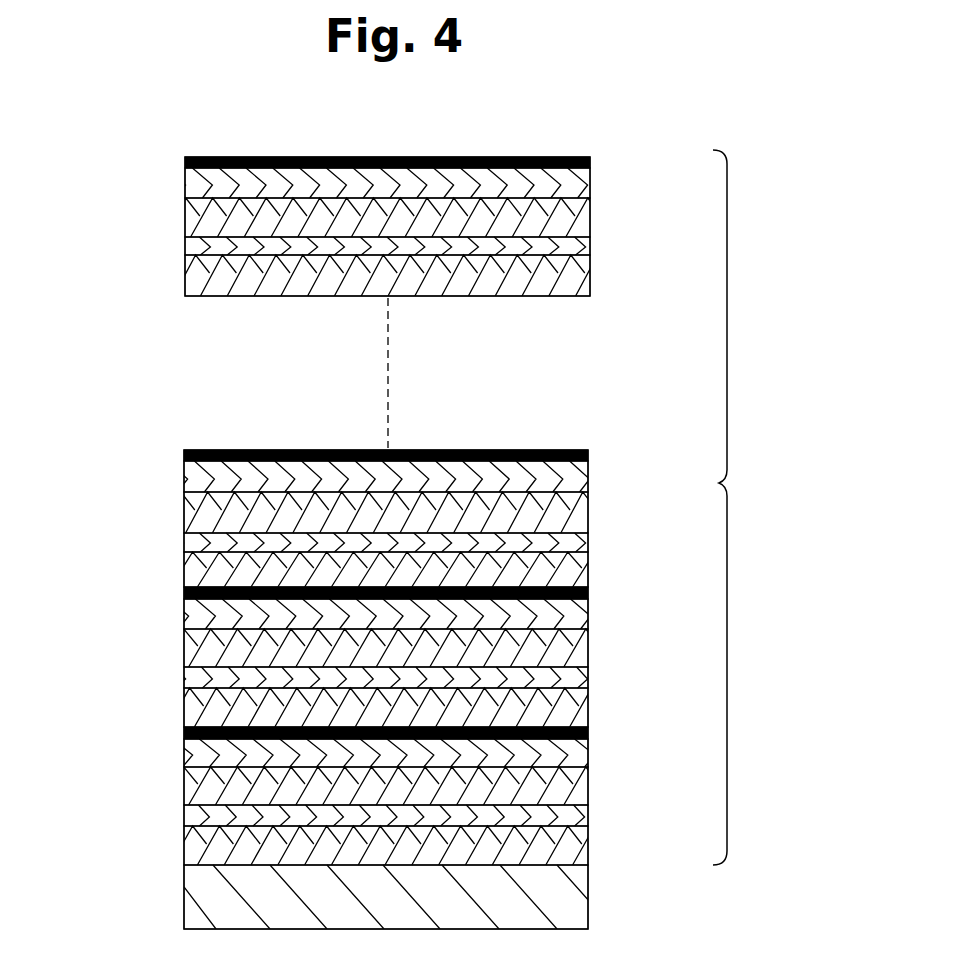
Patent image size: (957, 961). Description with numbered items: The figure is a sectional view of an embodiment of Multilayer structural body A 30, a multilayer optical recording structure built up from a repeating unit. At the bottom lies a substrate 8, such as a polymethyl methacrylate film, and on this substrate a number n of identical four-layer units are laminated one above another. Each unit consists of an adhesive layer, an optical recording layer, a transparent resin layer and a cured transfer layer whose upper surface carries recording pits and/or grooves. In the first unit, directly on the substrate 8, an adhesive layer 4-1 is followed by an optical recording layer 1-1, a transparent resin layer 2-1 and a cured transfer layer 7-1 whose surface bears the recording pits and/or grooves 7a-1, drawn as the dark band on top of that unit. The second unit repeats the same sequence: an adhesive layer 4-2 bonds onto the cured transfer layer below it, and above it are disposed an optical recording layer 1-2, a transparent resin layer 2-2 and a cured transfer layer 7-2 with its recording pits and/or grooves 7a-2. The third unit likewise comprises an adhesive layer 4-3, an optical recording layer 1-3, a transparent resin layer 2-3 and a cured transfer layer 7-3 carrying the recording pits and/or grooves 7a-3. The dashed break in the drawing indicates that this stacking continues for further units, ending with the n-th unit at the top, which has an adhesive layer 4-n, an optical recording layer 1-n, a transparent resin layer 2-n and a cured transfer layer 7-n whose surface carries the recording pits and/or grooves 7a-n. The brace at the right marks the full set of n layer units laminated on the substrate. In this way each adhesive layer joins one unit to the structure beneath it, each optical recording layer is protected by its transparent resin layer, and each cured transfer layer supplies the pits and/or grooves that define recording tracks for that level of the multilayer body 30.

The Multilayer structural body A 30 is at (555, 137).
The substrate 8 is at (588, 897).
The adhesive layer 4-1 is at (588, 845).
The optical recording layer 1-1 is at (588, 815).
The transparent resin layer 2-1 is at (588, 786).
The cured transfer layer 7-1 is at (173, 727).
The recording pits and/or grooves 7a-1 is at (184, 730).
The adhesive layer 4-2 is at (588, 707).
The optical recording layer 1-2 is at (588, 677).
The transparent resin layer 2-2 is at (588, 648).
The cured transfer layer 7-2 is at (173, 590).
The recording pits and/or grooves 7a-2 is at (184, 590).
The adhesive layer 4-3 is at (588, 570).
The optical recording layer 1-3 is at (588, 542).
The transparent resin layer 2-3 is at (588, 510).
The cured transfer layer 7-3 is at (173, 445).
The recording pits and/or grooves 7a-3 is at (184, 452).
The adhesive layer 4-n is at (590, 275).
The optical recording layer 1-n is at (590, 246).
The transparent resin layer 2-n is at (590, 217).
The cured transfer layer 7-n is at (173, 152).
The recording pits and/or grooves 7a-n is at (185, 160).